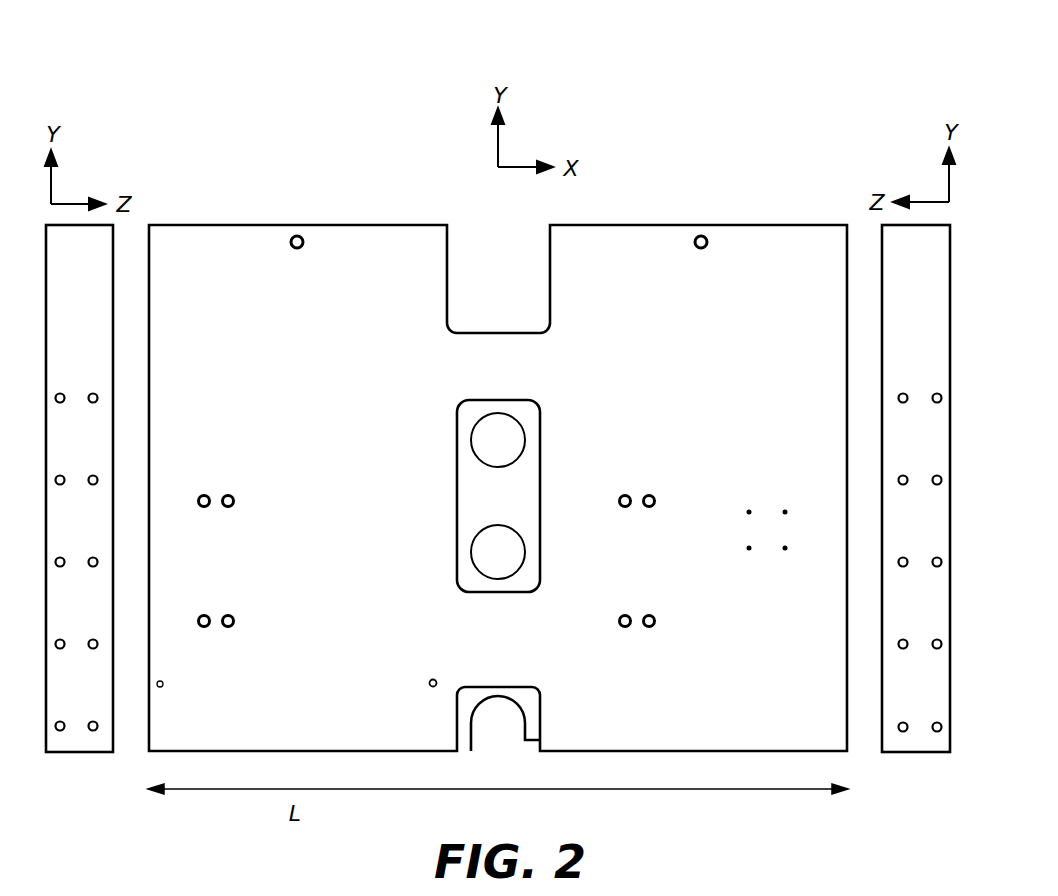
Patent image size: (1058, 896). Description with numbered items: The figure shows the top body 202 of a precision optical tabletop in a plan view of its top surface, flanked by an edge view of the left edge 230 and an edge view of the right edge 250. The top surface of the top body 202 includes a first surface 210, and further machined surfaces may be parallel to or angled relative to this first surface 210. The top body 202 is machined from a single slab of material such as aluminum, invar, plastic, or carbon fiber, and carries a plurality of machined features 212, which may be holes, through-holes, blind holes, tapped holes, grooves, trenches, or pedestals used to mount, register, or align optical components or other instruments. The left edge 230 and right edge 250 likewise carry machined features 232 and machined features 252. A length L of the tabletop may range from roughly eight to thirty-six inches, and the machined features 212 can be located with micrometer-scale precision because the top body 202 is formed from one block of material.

The top body 202 is at (226, 70).
The first surface 210 is at (276, 278).
The machined features 212 is at (470, 698).
The left edge 230 is at (74, 742).
The machined features 232 is at (60, 391).
The right edge 250 is at (940, 742).
The machined features 252 is at (937, 391).